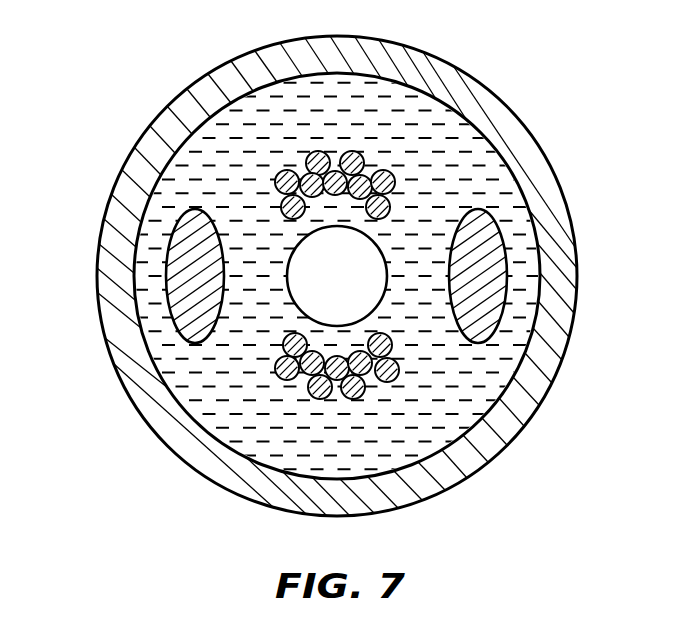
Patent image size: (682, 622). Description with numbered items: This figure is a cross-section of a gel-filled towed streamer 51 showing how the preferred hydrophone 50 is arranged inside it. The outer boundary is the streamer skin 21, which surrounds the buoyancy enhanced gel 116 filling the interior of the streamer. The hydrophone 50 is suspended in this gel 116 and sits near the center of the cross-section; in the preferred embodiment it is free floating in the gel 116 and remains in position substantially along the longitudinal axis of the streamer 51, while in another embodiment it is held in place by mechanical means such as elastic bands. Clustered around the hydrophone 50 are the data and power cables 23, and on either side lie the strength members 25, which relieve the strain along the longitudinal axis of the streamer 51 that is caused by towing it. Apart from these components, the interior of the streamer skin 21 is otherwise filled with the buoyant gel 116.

The streamer 51 is at (116, 75).
The streamer skin 21 is at (96, 248).
The data and power cables 23 is at (355, 146).
The buoyancy enhanced gel 116 is at (461, 185).
The strength members 25 is at (510, 322).
The hydrophone 50 is at (388, 318).